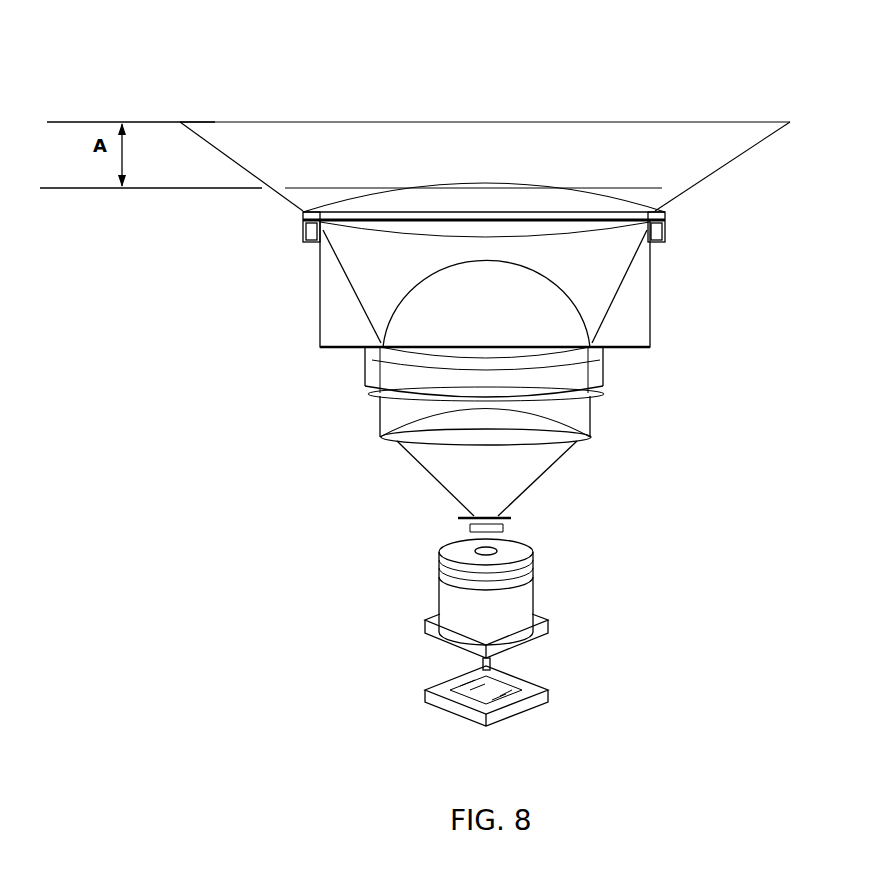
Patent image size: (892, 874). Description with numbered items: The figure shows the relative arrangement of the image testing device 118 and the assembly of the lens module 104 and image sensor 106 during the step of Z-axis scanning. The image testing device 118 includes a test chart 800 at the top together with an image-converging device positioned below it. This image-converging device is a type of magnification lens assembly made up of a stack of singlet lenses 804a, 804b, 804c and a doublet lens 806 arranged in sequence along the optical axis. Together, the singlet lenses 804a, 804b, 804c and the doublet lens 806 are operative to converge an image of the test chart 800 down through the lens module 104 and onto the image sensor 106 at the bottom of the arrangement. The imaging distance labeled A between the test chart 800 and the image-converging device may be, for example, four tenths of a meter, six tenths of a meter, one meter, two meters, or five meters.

The test chart 800 is at (681, 96).
The singlet lens 804a is at (290, 231).
The singlet lens 804b is at (307, 323).
The singlet lens 804c is at (364, 437).
The doublet lens 806 is at (606, 378).
The image testing device 118 is at (661, 471).
The lens module 104 is at (550, 582).
The image sensor 106 is at (422, 693).